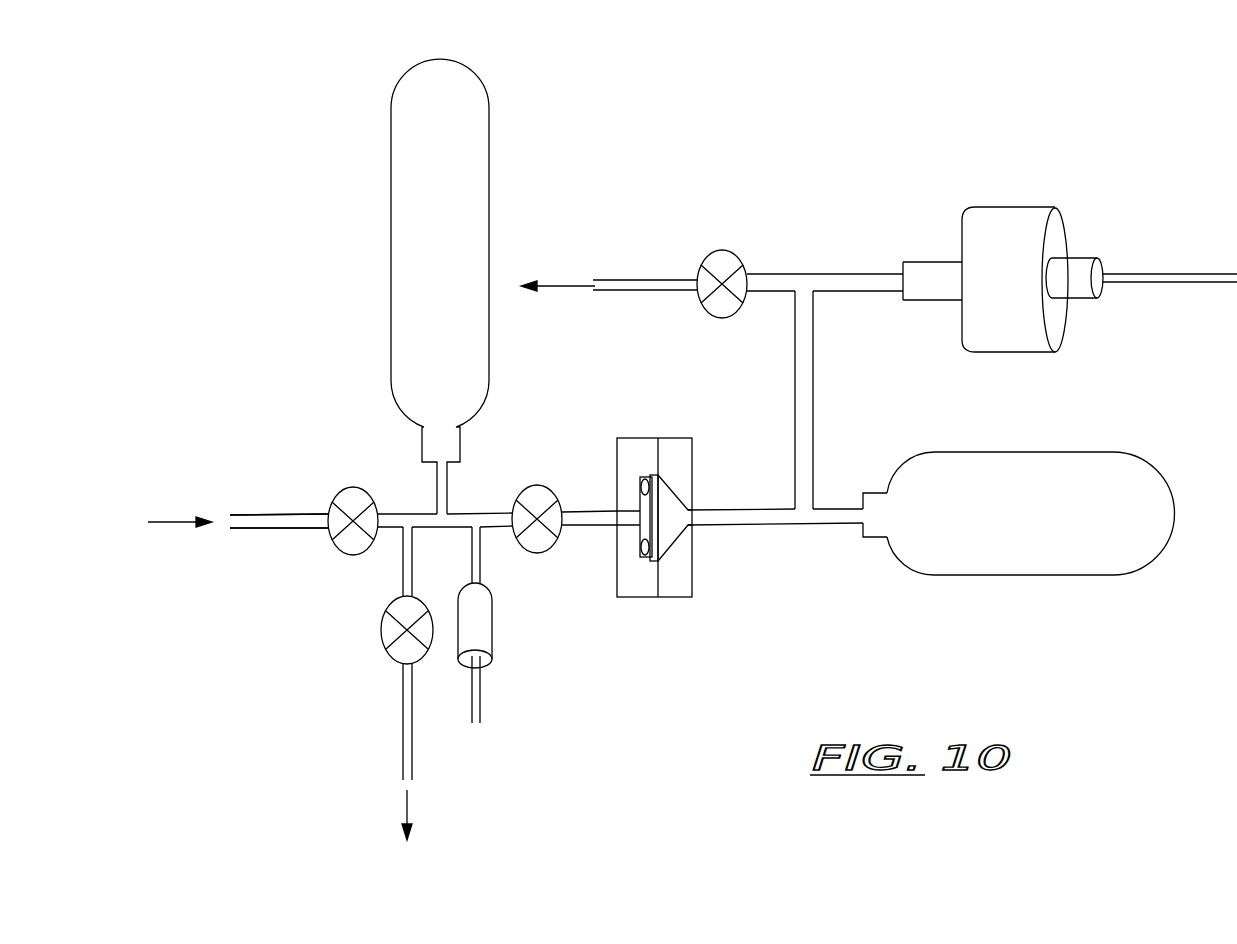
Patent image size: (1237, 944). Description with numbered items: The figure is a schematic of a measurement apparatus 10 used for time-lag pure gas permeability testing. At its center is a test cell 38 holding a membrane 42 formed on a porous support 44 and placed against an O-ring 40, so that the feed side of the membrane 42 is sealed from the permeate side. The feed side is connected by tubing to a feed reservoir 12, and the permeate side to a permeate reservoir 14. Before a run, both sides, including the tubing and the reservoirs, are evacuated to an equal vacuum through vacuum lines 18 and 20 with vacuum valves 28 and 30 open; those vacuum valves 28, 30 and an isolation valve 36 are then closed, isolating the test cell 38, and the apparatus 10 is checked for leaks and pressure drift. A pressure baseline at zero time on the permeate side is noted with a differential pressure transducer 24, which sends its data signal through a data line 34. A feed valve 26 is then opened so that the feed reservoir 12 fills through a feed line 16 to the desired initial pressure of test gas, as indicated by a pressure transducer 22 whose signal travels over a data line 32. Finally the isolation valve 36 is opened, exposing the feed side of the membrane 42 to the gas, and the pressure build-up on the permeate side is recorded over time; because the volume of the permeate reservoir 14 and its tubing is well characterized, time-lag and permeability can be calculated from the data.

The measurement apparatus 10 is at (1158, 116).
The feed reservoir 12 is at (453, 218).
The permeate reservoir 14 is at (1040, 525).
The feed line 16 is at (284, 515).
The vacuum line 18 is at (402, 724).
The vacuum line 20 is at (648, 280).
The pressure transducer 22 is at (495, 618).
The differential pressure transducer 24 is at (1018, 352).
The feed valve 26 is at (353, 487).
The vacuum valve 28 is at (381, 630).
The vacuum valve 30 is at (725, 250).
The data line 32 is at (482, 695).
The data line 34 is at (1200, 273).
The isolation valve 36 is at (537, 485).
The test cell 38 is at (672, 447).
The O-ring 40 is at (640, 487).
The membrane 42 is at (645, 532).
The porous support 44 is at (660, 534).